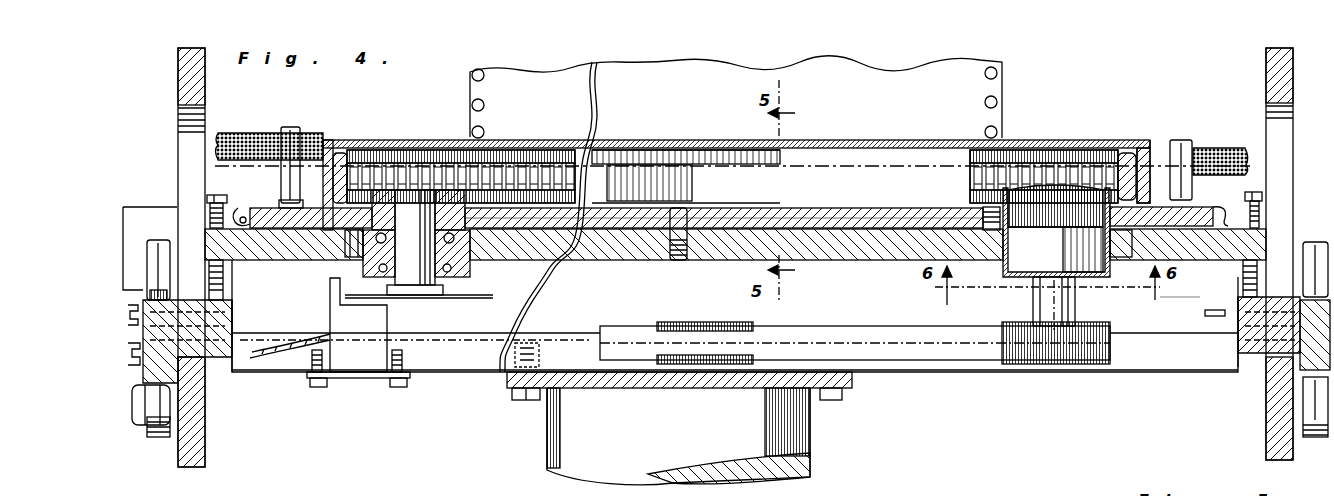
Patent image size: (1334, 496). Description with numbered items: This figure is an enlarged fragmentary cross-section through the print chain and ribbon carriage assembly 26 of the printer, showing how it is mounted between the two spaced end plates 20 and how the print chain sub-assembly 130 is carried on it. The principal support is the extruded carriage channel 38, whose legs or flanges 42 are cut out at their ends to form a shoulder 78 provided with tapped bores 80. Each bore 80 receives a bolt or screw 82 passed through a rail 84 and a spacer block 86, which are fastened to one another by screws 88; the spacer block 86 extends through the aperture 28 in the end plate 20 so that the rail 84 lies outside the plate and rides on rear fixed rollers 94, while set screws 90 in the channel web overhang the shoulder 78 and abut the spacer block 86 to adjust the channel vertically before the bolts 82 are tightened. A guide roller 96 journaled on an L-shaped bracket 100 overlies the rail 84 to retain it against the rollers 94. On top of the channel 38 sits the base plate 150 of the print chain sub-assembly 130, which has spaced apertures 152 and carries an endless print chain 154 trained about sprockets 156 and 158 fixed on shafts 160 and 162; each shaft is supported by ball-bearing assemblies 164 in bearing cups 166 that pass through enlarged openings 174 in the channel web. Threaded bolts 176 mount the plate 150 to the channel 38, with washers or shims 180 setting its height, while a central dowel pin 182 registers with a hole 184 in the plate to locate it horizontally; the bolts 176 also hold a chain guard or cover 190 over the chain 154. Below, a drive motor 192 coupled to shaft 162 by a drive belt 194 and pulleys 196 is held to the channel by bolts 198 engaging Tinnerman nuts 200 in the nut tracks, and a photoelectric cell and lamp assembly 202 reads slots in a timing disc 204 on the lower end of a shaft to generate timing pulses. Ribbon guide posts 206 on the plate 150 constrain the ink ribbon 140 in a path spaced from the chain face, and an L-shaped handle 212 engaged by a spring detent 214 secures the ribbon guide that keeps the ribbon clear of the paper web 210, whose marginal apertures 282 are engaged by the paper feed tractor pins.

The end plates 20 is at (183, 80).
The apertures 28 is at (190, 158).
The print chain and ribbon carriage assembly 26 is at (1084, 374).
The carriage channel 38 is at (822, 258).
The legs or flanges 42 is at (1187, 306).
The shoulder 78 is at (233, 360).
The tapped bores 80 is at (1215, 297).
The bolt or screw 82 is at (1322, 296).
The rail 84 is at (128, 390).
The spacer block 86 is at (222, 347).
The screws 88 is at (137, 342).
The set screws 90 is at (216, 198).
The rear fixed rollers 94 is at (155, 440).
The guide roller 96 is at (162, 243).
The L-shaped bracket 100 is at (133, 222).
The print chain sub-assembly 130 is at (1044, 131).
The ink ribbon 140 is at (1227, 150).
The base plate 150 is at (810, 216).
The apertures 152 is at (1012, 216).
The endless print chain 154 is at (1118, 158).
The gear or sprocket 156 is at (410, 170).
The gear or sprocket 158 is at (1058, 176).
The shaft 160 is at (412, 262).
The shaft 162 is at (1027, 303).
The ball-bearing assemblies 164 is at (478, 262).
The bearing cups 166 is at (472, 281).
The enlarged openings 174 is at (1113, 278).
The threaded bolts 176 is at (293, 200).
The washers or shims 180 is at (310, 258).
The central dowel pin 182 is at (677, 255).
The hole 184 is at (704, 210).
The chain guard or cover 190 is at (1017, 138).
The drive motor 192 is at (790, 438).
The drive belt 194 is at (957, 348).
The pulleys 196 is at (705, 300).
The bolts 198 is at (513, 402).
The Tinnerman nuts 200 is at (541, 352).
The photoelectric cell and lamp assembly 202 is at (369, 345).
The timing disc 204 is at (446, 296).
The ribbon guide posts or rollers 206 is at (294, 130).
The record receiving web or paper 210 is at (696, 99).
The L-shaped handle 212 is at (237, 212).
The spring detent 214 is at (258, 208).
The apertures 282 is at (487, 130).